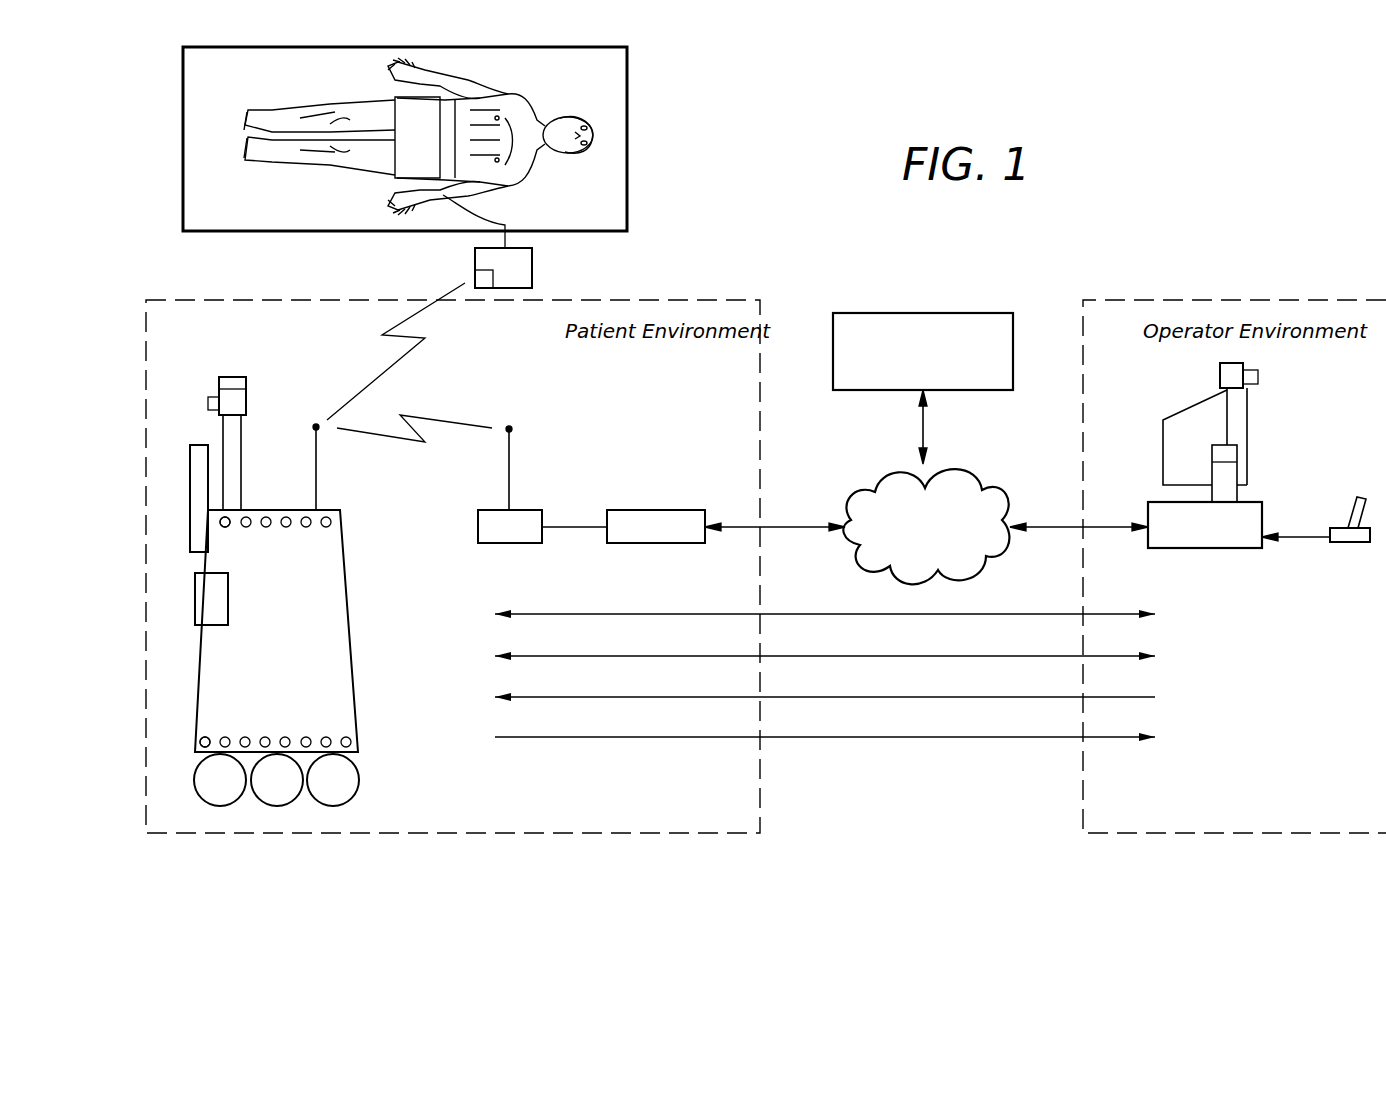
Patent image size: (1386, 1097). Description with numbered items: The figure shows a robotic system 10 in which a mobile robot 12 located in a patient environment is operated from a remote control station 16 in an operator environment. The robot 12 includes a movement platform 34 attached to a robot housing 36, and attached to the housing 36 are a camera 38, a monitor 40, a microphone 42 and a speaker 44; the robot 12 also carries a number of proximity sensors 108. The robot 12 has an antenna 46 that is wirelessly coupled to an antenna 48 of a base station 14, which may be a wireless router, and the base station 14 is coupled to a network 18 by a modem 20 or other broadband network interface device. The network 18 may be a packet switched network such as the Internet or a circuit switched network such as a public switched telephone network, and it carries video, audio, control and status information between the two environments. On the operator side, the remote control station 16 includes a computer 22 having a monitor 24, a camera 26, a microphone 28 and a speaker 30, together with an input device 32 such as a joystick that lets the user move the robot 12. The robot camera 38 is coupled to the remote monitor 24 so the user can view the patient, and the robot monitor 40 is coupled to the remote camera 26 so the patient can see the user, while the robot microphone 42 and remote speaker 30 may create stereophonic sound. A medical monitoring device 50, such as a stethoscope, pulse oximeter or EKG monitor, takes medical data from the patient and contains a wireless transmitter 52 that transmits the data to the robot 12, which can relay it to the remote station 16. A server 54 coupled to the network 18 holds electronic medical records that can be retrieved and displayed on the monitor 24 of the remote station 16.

The system 10 is at (828, 702).
The robot 12 is at (322, 562).
The base station 14 is at (525, 510).
The remote control station 16 is at (1170, 458).
The network 18 is at (926, 526).
The modem 20 is at (655, 510).
The computer 22 is at (1212, 552).
The monitor 24 is at (1240, 413).
The camera 26 is at (1225, 373).
The microphone 28 is at (1218, 445).
The speaker 30 is at (1232, 493).
The input device 32 is at (1352, 545).
The movement platform 34 is at (338, 785).
The robot housing 36 is at (235, 712).
The camera 38 is at (240, 407).
The monitor 40 is at (197, 487).
The microphone 42 is at (232, 383).
The speaker 44 is at (205, 603).
The antenna 46 is at (318, 430).
The antenna 48 is at (509, 426).
The medical monitoring device 50 is at (438, 194).
The wireless transmitter 52 is at (480, 278).
The server 54 is at (923, 351).
The proximity sensors 108 is at (218, 522).